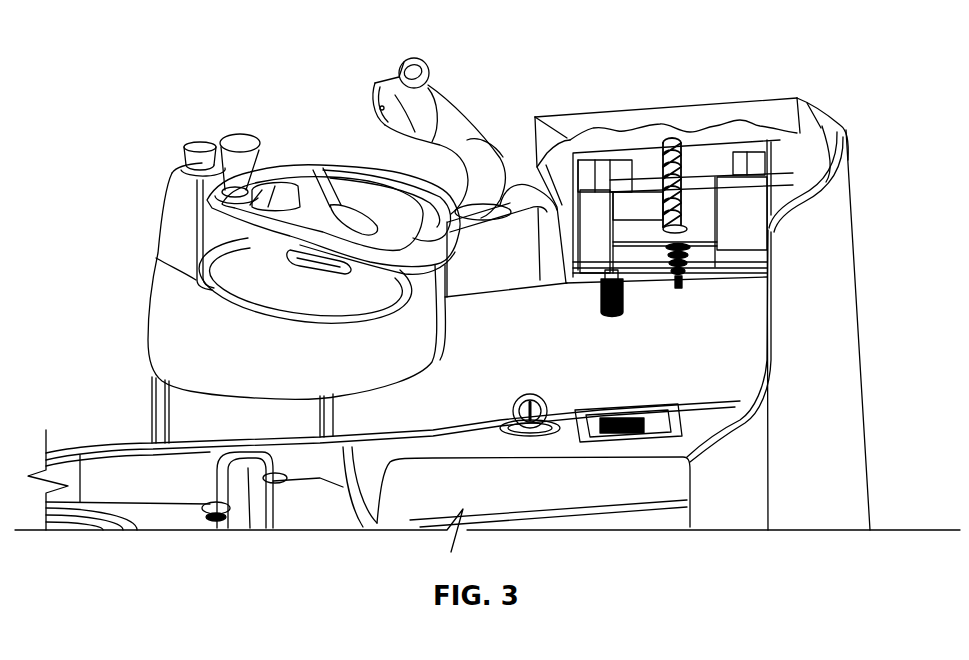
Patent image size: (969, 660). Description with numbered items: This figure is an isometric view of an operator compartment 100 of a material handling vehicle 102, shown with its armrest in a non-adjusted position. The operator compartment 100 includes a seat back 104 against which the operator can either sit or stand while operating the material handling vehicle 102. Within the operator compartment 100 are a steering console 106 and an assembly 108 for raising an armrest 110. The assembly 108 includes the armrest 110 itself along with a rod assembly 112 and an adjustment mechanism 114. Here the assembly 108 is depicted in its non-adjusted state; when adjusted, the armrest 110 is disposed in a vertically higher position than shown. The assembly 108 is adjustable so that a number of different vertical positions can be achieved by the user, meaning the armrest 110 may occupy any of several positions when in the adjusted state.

The operator compartment 100 is at (155, 70).
The material handling vehicle 102 is at (115, 117).
The seat back 104 is at (837, 320).
The steering console 106 is at (183, 212).
The assembly 108 is at (812, 57).
The armrest 110 is at (585, 50).
The rod assembly 112 is at (678, 285).
The adjustment mechanism 114 is at (613, 325).